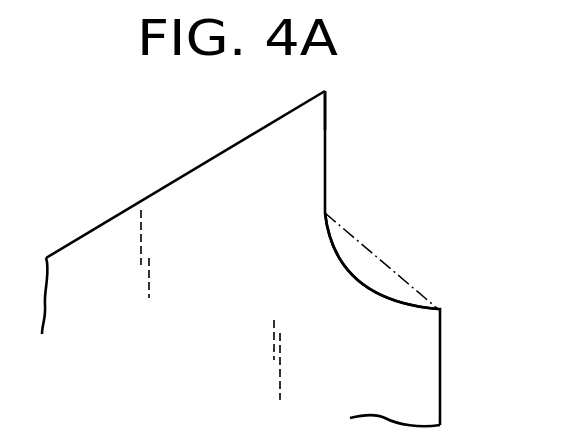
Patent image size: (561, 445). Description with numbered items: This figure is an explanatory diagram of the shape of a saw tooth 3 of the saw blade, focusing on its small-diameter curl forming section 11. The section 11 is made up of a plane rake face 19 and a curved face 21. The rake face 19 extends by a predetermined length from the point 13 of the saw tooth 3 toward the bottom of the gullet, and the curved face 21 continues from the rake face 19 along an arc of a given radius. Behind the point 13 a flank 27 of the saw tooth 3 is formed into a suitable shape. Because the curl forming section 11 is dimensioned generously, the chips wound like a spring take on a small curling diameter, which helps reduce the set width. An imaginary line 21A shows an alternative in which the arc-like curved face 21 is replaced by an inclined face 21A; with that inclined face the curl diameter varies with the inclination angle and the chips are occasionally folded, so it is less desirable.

The flank 27 is at (70, 245).
The saw tooth 3 is at (153, 206).
The rake face 19 is at (325, 153).
The point 13 is at (328, 93).
The small-diameter curl forming section 11 is at (372, 215).
The curved face 21 is at (363, 289).
The inclined face 21A is at (393, 263).